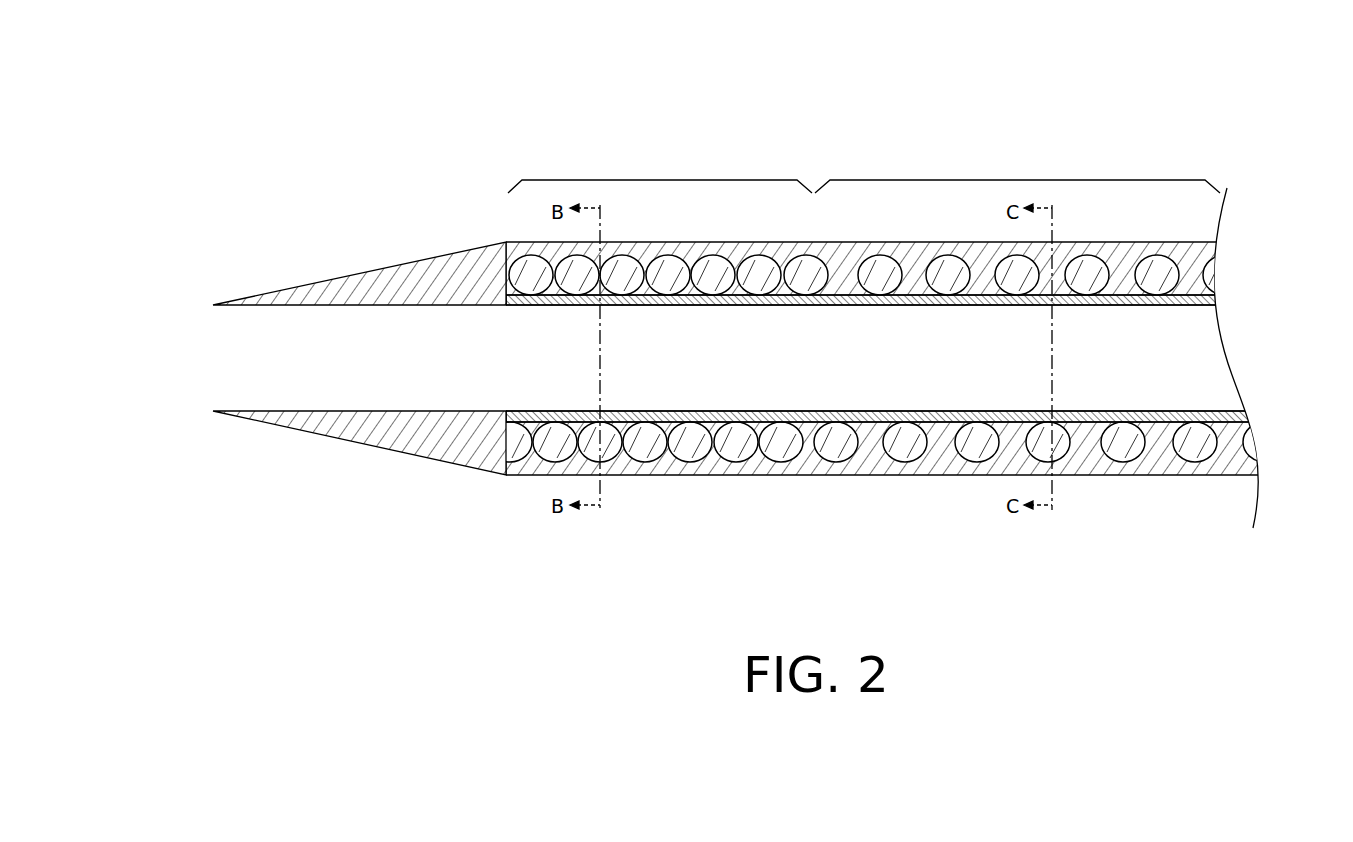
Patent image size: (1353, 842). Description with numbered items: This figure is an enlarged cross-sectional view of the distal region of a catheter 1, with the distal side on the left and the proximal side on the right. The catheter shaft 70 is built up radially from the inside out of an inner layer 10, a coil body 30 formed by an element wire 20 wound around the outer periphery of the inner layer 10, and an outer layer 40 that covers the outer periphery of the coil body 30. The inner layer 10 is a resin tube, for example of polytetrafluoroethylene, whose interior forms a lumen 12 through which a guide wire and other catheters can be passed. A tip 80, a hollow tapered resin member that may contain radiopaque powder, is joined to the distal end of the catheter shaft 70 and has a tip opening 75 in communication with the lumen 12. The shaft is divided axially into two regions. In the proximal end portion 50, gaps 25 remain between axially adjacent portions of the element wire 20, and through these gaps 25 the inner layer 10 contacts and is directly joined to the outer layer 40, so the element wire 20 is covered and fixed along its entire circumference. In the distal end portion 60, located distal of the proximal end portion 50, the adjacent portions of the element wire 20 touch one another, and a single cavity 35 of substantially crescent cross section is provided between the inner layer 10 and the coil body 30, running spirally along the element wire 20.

The catheter 1 is at (863, 58).
The inner layer 10 is at (1172, 303).
The lumen 12 is at (1207, 388).
The element wire 20 is at (1210, 283).
The gaps 25 is at (1130, 245).
The coil body 30 is at (1143, 463).
The cavity 35 is at (618, 307).
The outer layer 40 is at (1186, 250).
The proximal end portion 50 is at (965, 180).
The distal end portion 60 is at (652, 180).
The catheter shaft 70 is at (920, 242).
The tip opening 75 is at (232, 383).
The tip 80 is at (381, 292).